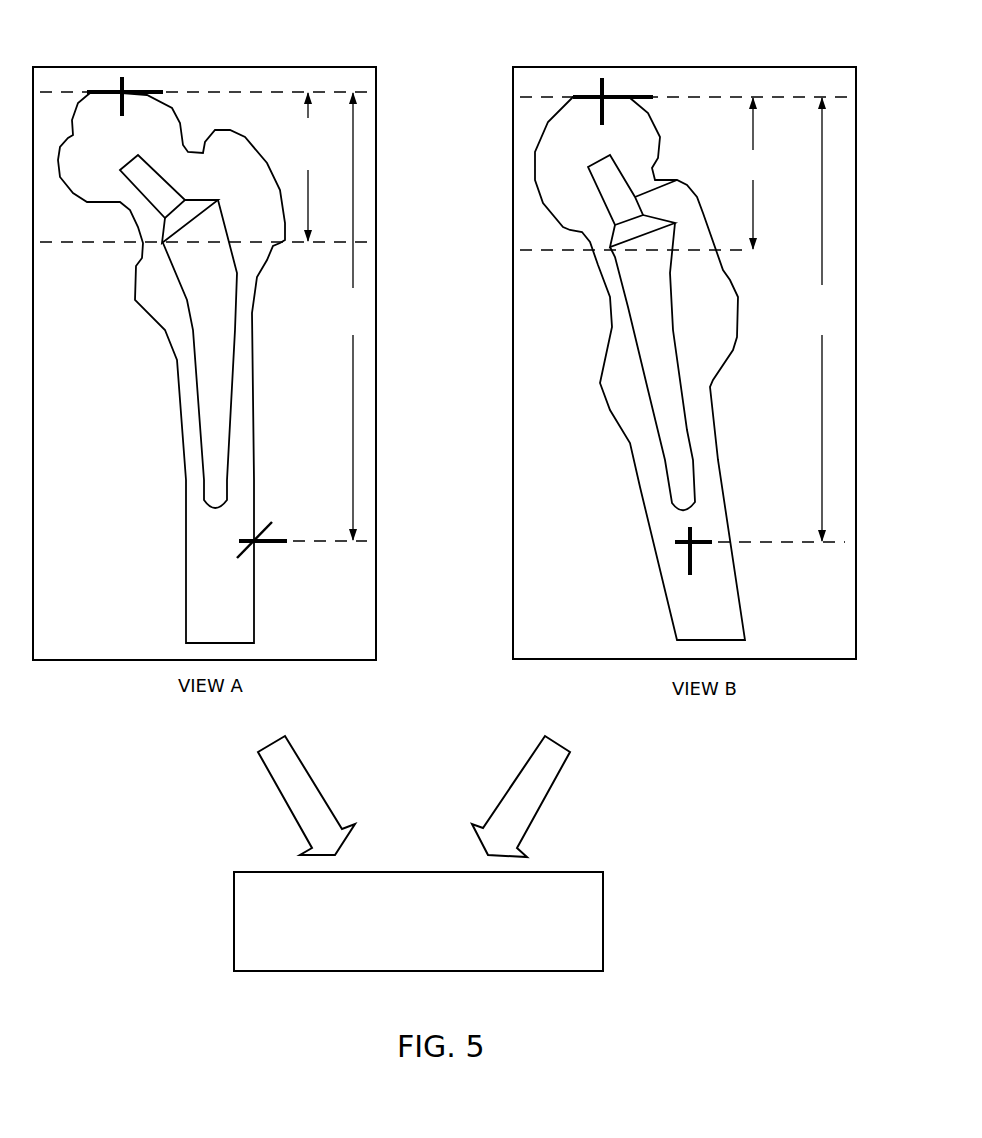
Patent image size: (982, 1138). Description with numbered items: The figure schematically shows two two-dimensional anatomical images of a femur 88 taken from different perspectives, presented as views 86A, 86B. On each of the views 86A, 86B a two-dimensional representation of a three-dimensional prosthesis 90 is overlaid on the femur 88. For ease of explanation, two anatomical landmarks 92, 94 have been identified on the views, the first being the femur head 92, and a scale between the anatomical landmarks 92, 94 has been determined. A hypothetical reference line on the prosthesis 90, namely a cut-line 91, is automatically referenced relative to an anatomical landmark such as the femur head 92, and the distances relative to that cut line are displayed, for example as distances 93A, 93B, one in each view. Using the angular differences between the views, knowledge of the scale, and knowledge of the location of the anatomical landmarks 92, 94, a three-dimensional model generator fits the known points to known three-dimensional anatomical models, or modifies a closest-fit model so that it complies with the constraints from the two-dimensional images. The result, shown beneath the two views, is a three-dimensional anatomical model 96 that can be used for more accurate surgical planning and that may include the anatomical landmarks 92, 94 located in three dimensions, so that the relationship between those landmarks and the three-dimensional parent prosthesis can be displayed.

The view 86A is at (283, 67).
The view 86B is at (761, 67).
The femur 88 is at (183, 497).
The 3D prosthesis 90 is at (407, 332).
The cut-line 91 is at (95, 242).
The anatomical landmark (femur head) 92 is at (110, 84).
The displayed distance 93A is at (270, 140).
The displayed distance 93B is at (714, 162).
The anatomical landmark 94 is at (259, 551).
The 3D anatomical model 96 is at (603, 932).